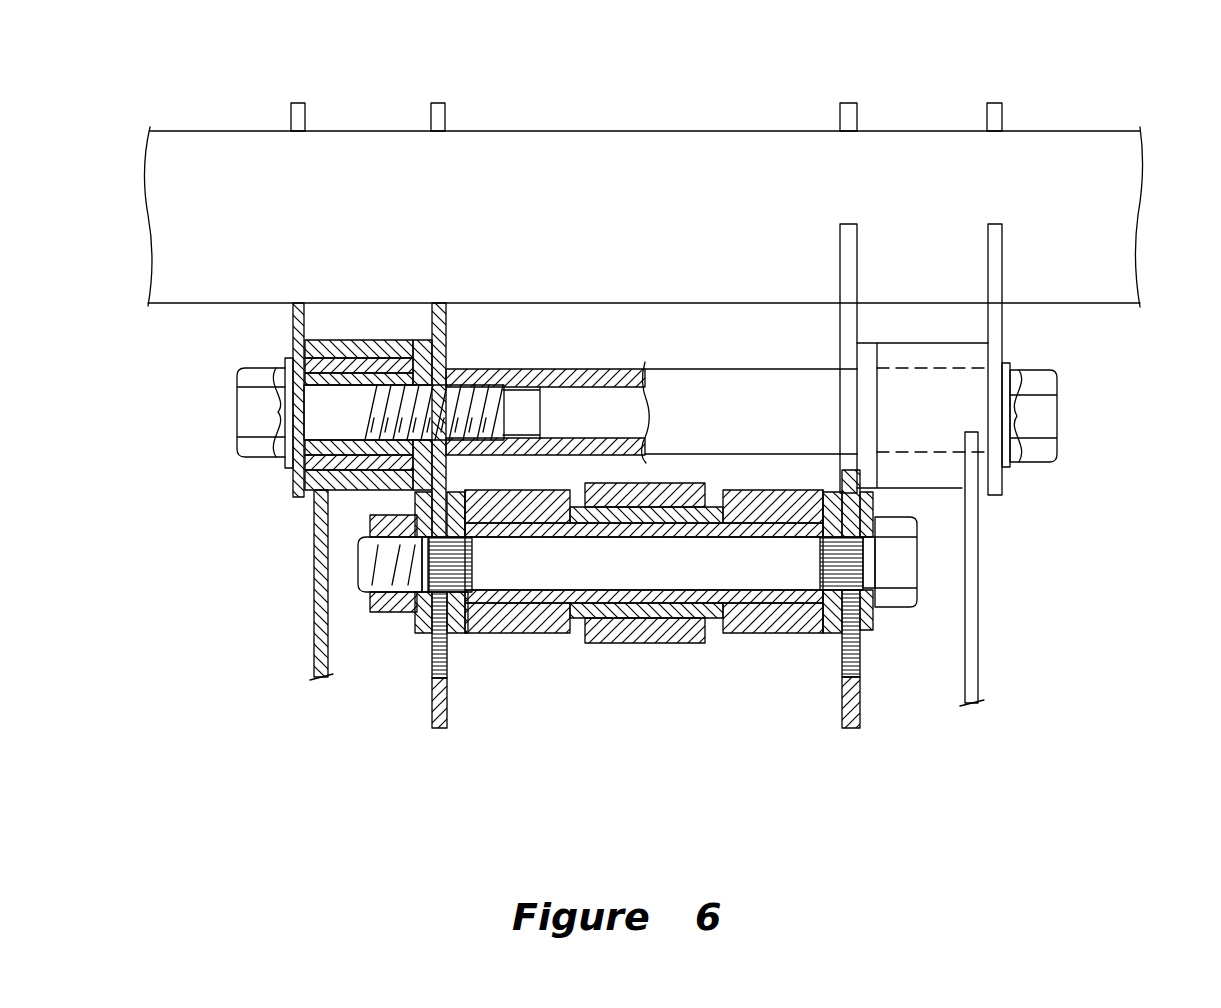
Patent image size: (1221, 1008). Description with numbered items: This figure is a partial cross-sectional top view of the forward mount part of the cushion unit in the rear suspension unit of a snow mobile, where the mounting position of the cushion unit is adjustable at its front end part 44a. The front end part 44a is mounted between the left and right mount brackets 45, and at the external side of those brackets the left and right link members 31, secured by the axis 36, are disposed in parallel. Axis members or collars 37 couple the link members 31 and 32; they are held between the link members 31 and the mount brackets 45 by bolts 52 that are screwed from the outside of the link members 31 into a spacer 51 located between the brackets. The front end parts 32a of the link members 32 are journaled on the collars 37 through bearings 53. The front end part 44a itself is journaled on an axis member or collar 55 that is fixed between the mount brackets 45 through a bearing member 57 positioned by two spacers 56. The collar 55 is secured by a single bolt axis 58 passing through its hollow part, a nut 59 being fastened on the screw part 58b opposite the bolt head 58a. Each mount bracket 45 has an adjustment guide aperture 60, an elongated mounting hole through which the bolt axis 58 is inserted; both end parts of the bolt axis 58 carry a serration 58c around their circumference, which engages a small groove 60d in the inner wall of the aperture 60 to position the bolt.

The link member 31 is at (293, 326).
The link member 32 is at (315, 611).
The front end part 32a is at (368, 352).
The axis 36 is at (714, 146).
The axis member (collar) 37 is at (325, 452).
The front end part 44a is at (646, 645).
The mount bracket 45 is at (447, 345).
The spacer 51 is at (753, 388).
The bolt 52 is at (253, 414).
The bearing 53 is at (332, 352).
The axis member (collar) 55 is at (507, 623).
The spacer 56 is at (552, 634).
The bearing member 57 is at (583, 636).
The bolt axis 58 is at (762, 547).
The bolt head 58a is at (905, 568).
The screw part 58b is at (357, 550).
The serration 58c is at (472, 572).
The nut 59 is at (398, 612).
The adjustment guide aperture 60 is at (412, 653).
The small groove 60d is at (430, 675).